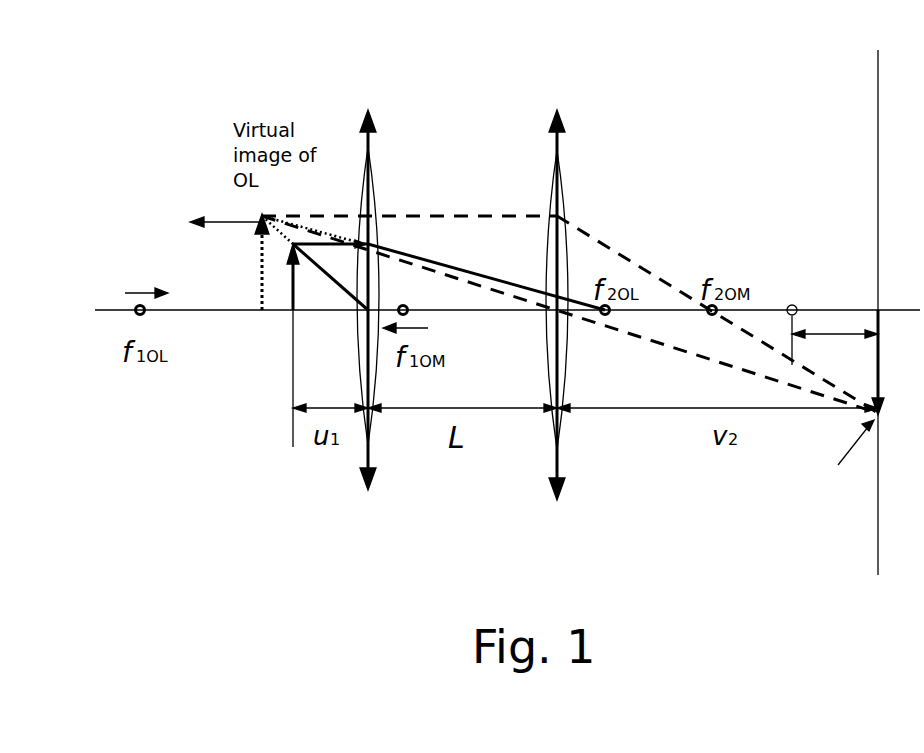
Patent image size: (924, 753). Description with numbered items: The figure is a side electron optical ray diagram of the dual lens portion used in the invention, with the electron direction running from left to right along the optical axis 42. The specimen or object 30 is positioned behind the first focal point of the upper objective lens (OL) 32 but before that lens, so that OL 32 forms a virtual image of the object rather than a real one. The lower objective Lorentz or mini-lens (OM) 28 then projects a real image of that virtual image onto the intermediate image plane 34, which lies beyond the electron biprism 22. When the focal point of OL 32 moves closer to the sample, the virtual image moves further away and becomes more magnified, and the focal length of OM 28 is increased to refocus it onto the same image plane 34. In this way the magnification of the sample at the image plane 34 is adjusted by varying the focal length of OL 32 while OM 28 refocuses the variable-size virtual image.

The optical axis 42 is at (107, 310).
The upper objective lens (OL) 32 is at (375, 145).
The lower objective Lorentz or mini-lens (OM) 28 is at (562, 152).
The intermediate image plane 34 is at (878, 187).
The electron biprism 22 is at (817, 308).
The specimen or object 30 is at (286, 325).